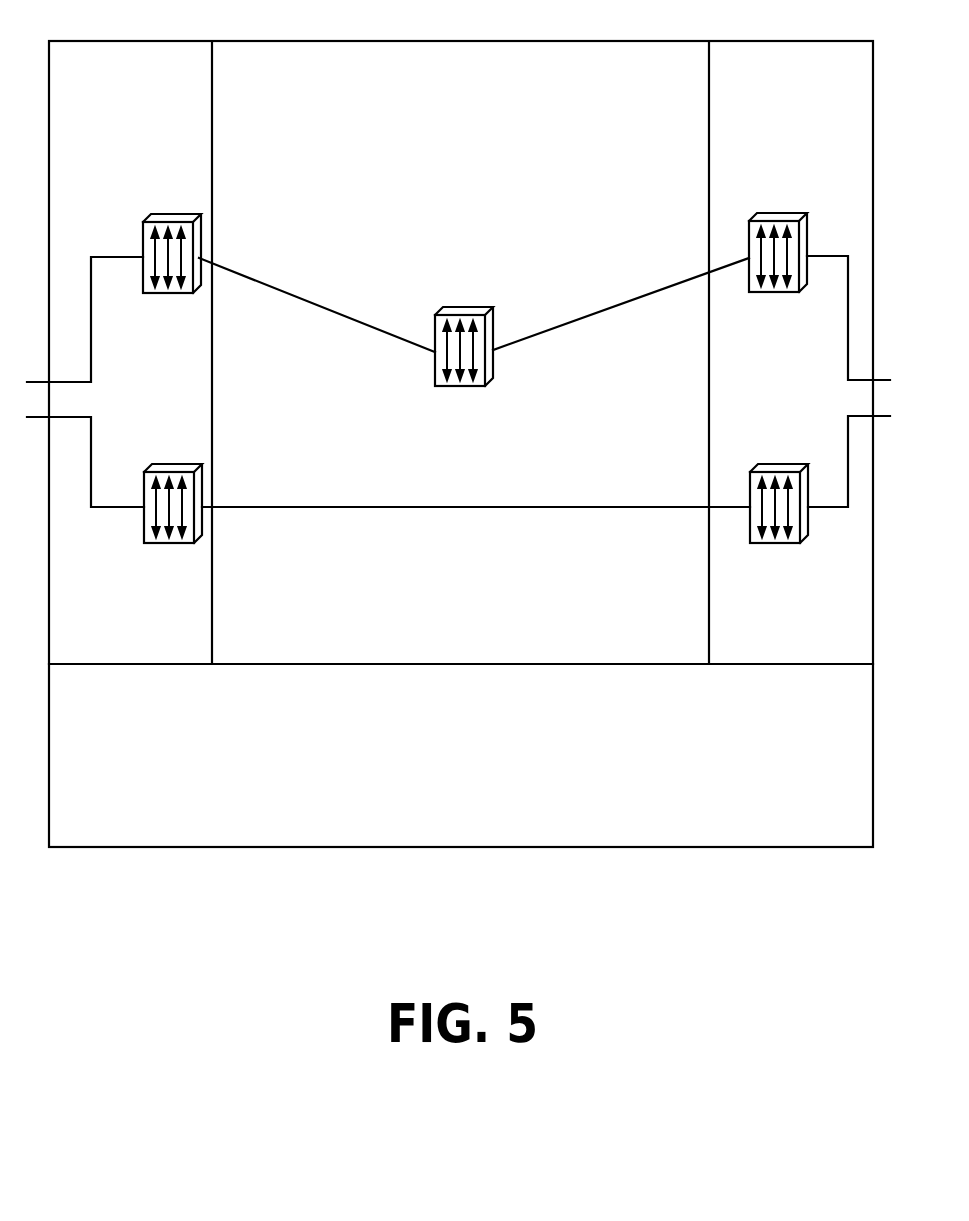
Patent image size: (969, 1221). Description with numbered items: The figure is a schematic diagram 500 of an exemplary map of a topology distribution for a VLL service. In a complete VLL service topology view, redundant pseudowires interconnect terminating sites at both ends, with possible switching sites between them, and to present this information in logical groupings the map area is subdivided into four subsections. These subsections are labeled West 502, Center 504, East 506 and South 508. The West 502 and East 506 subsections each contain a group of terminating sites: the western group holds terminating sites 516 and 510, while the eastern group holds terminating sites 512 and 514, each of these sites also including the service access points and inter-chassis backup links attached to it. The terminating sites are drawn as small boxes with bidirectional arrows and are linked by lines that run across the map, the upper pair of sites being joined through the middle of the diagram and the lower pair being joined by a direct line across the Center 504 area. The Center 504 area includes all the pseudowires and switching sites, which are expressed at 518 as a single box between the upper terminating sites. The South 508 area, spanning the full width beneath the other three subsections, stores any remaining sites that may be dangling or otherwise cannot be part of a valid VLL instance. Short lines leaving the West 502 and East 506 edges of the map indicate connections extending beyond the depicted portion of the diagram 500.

The schematic diagram 500 is at (627, 908).
The West subsection 502 is at (153, 112).
The Center subsection 504 is at (478, 112).
The East subsection 506 is at (808, 112).
The South subsection 508 is at (207, 779).
The terminating site 510 is at (168, 543).
The terminating site 512 is at (774, 213).
The terminating site 514 is at (773, 543).
The terminating site 516 is at (177, 213).
The switching sites and pseudowires 518 is at (467, 307).